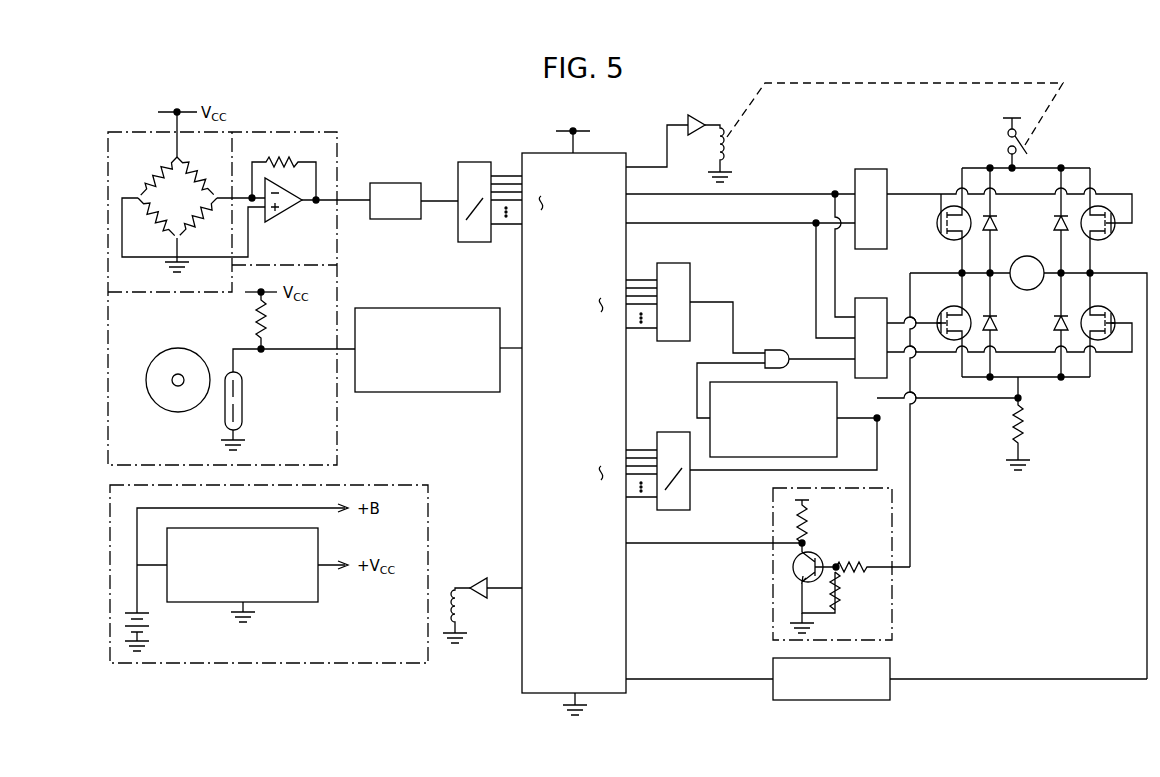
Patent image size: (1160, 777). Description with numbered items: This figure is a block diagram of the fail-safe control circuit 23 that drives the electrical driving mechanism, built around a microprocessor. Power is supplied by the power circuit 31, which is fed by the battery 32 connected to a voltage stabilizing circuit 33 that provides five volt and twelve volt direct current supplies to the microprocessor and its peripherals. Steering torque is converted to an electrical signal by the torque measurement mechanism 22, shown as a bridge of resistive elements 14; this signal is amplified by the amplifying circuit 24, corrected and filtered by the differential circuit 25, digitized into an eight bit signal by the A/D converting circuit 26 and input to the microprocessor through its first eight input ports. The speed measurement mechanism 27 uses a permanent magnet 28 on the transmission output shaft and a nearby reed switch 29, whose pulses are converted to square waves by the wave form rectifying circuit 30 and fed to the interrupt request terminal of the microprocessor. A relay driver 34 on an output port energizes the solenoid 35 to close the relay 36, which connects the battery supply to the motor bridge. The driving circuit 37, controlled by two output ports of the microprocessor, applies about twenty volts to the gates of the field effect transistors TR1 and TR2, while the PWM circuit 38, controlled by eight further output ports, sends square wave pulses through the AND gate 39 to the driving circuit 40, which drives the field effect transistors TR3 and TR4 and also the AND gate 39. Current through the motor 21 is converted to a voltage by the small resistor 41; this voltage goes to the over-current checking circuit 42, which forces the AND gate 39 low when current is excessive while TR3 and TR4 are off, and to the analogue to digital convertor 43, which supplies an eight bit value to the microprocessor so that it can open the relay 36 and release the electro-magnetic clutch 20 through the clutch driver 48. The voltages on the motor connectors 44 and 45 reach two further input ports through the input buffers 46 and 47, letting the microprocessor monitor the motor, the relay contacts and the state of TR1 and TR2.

The strain gauge resistor 14 is at (150, 180).
The electro-magnetic clutch 20 is at (466, 612).
The motor 21 is at (1027, 256).
The torque measurement mechanism 22 is at (131, 131).
The control circuit 23 is at (460, 682).
The amplifying circuit 24 is at (305, 131).
The differential circuit 25 is at (400, 183).
The A/D converting circuit 26 is at (473, 162).
The speed measurement mechanism 27 is at (340, 425).
The permanent magnet 28 is at (158, 408).
The reed switch 29 is at (243, 400).
The wave form rectifying circuit 30 is at (423, 308).
The power circuit 31 is at (428, 485).
The battery 32 is at (149, 630).
The voltage stabilizing circuit 33 is at (300, 602).
The relay driver 34 is at (700, 119).
The solenoid 35 is at (730, 150).
The relay 36 is at (1007, 139).
The driving circuit 37 is at (872, 169).
The PWM circuit 38 is at (690, 282).
The AND gate 39 is at (778, 350).
The driving circuit 40 is at (872, 298).
The resistor 41 is at (1022, 432).
The over-current checking circuit 42 is at (837, 450).
The analogue to digital convertor 43 is at (668, 432).
The connector 44 is at (992, 276).
The connector 45 is at (1060, 276).
The input buffer 46 is at (773, 582).
The input buffer 47 is at (773, 662).
The clutch driver 48 is at (479, 582).
The field effect transistor TR1 is at (942, 237).
The field effect transistor TR2 is at (1109, 237).
The field effect transistor TR3 is at (942, 311).
The field effect transistor TR4 is at (1109, 311).